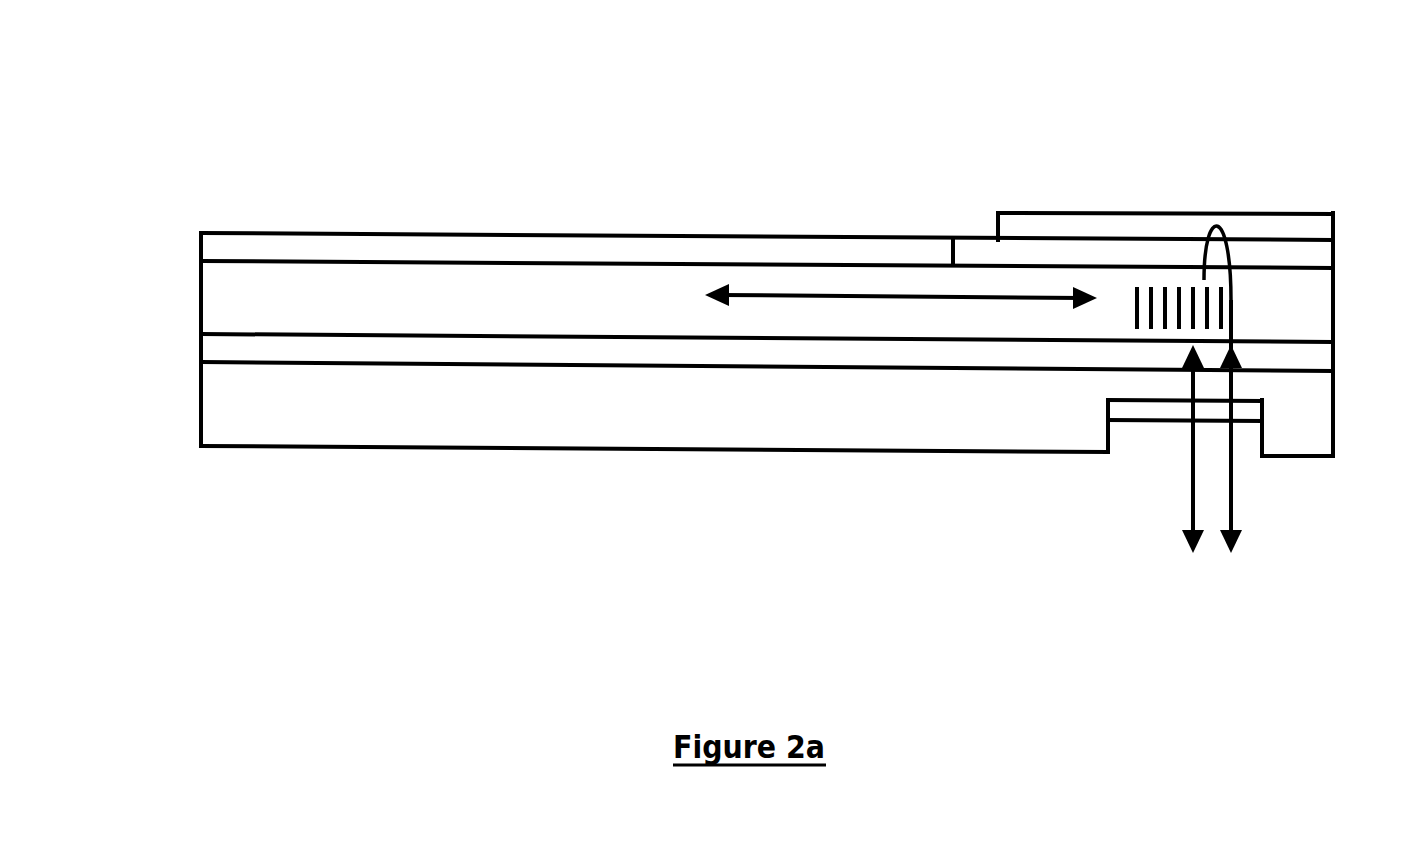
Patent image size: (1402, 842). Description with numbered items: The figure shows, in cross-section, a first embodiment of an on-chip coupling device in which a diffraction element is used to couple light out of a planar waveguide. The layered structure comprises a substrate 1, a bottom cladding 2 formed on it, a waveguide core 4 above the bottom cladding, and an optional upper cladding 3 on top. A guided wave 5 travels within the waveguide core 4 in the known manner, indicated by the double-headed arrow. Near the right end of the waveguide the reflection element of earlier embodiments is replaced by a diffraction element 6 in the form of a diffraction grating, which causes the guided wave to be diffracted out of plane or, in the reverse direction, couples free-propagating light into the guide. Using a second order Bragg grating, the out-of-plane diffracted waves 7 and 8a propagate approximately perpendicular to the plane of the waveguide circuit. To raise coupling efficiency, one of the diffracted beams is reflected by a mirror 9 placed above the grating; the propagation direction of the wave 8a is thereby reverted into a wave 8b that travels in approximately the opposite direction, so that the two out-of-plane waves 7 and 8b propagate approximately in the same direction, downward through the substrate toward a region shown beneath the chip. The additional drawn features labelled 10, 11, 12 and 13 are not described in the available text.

The substrate 1 is at (237, 403).
The bottom cladding 2 is at (243, 348).
The upper cladding 3 is at (395, 249).
The waveguide core 4 is at (607, 293).
The guided wave 5 is at (788, 292).
The diffraction element 6 is at (1207, 310).
The out-of-plane diffracted wave 7 is at (1187, 480).
The out-of-plane diffracted wave 8a is at (1203, 253).
The reverted wave 8b is at (1233, 470).
The mirror 9 is at (1272, 230).
The photodetector 10 is at (1162, 437).
The recess side wall 11 is at (1243, 385).
The upper layer 12 is at (1012, 253).
The detector contact layer 13 is at (1134, 408).